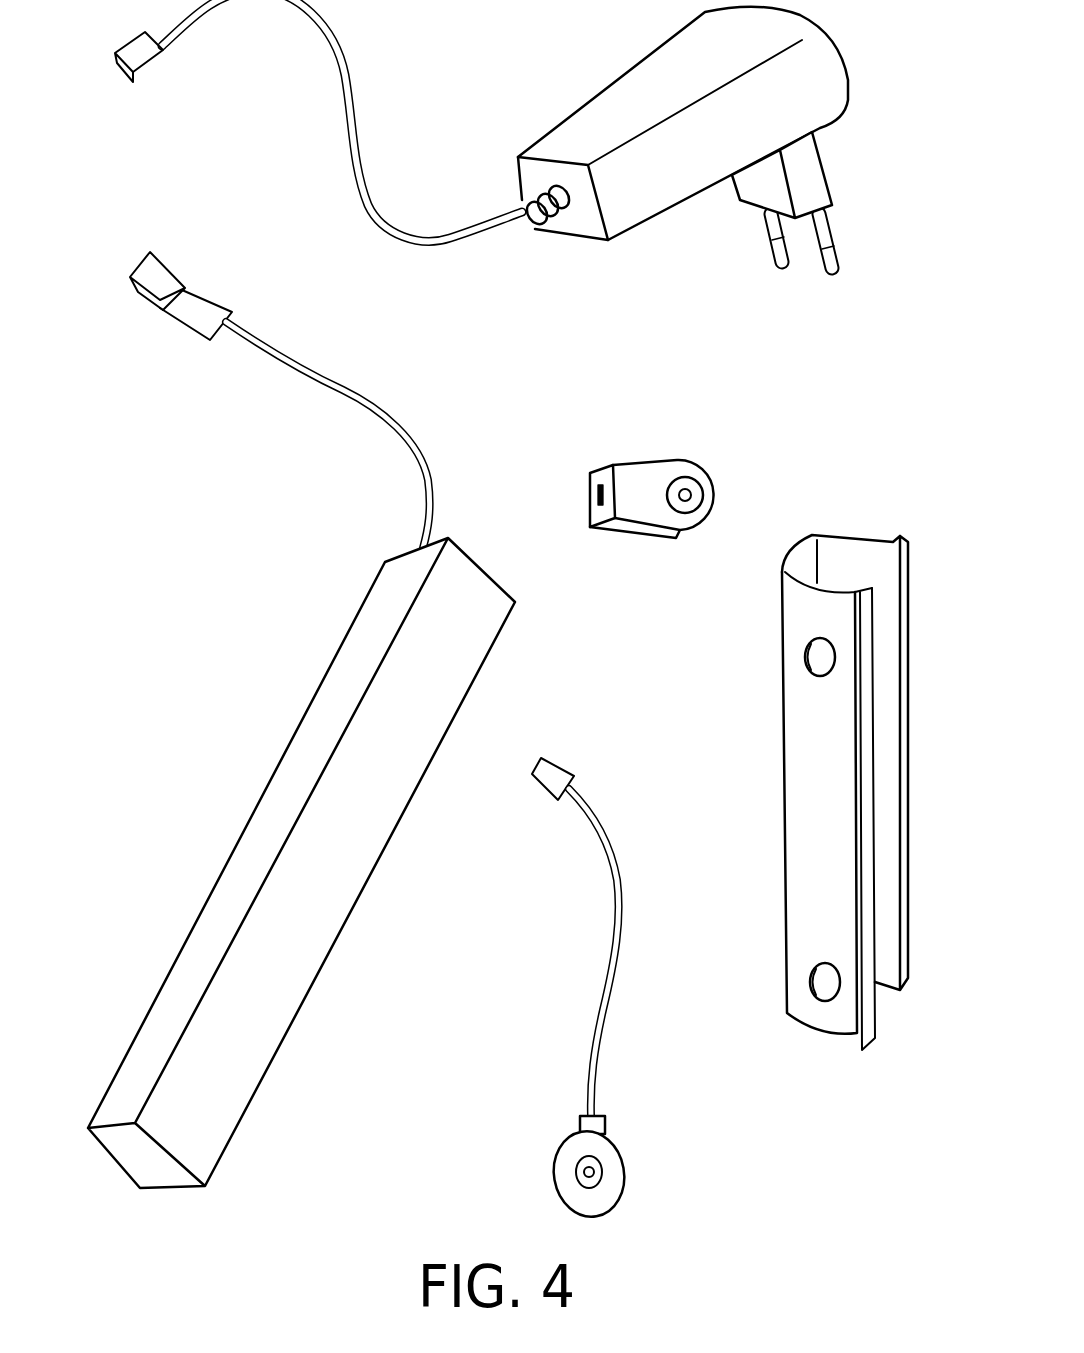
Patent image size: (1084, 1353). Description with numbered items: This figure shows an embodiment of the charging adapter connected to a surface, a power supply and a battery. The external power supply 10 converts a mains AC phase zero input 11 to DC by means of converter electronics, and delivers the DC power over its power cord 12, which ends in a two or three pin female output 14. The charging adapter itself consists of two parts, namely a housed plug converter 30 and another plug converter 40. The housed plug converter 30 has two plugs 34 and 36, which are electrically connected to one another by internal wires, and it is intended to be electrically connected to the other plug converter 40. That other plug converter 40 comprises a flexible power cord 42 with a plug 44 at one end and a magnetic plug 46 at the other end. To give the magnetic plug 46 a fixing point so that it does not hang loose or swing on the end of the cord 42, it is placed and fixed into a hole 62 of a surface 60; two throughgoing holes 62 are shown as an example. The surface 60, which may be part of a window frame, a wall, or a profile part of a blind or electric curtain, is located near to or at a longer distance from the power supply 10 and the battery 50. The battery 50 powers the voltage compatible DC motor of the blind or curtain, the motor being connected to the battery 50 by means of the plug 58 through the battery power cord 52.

The external power supply 10 is at (650, 80).
The AC phase zero input 11 is at (807, 170).
The power cord 12 is at (348, 72).
The female output 14 is at (140, 50).
The plug converter 30 is at (652, 452).
The plug 34 is at (602, 495).
The plug 36 is at (687, 495).
The plug converter 40 is at (596, 950).
The flexible power cord 42 is at (617, 915).
The plug 44 is at (558, 776).
The magnetic plug 46 is at (591, 1171).
The battery 50 is at (290, 959).
The battery power cord 52 is at (392, 430).
The plug 58 is at (153, 287).
The surface 60 is at (793, 792).
The hole 62 is at (817, 657).